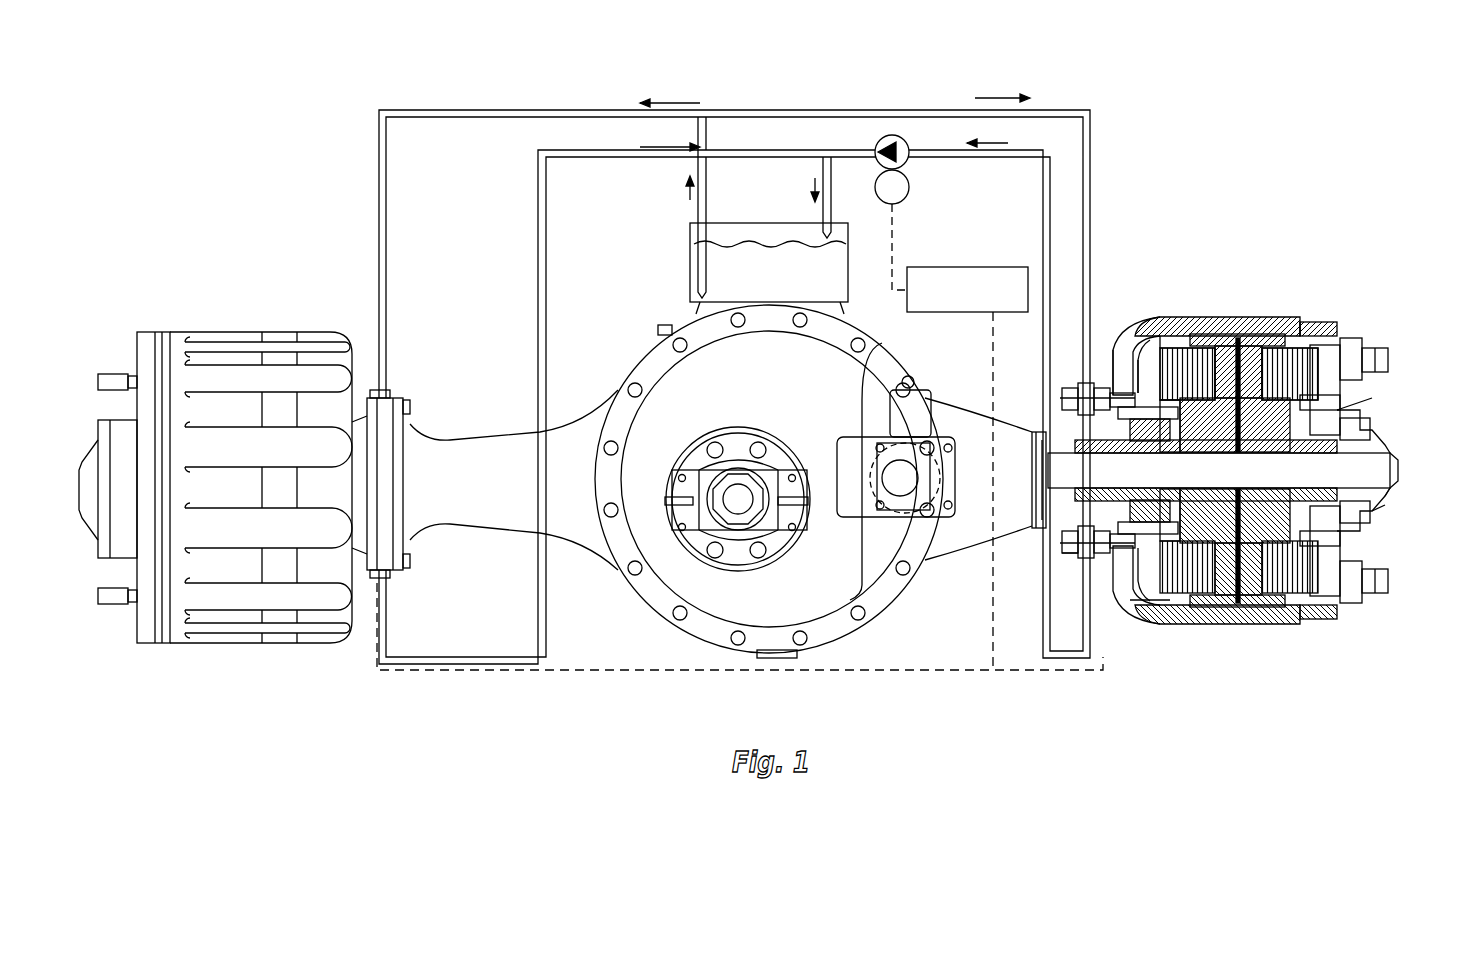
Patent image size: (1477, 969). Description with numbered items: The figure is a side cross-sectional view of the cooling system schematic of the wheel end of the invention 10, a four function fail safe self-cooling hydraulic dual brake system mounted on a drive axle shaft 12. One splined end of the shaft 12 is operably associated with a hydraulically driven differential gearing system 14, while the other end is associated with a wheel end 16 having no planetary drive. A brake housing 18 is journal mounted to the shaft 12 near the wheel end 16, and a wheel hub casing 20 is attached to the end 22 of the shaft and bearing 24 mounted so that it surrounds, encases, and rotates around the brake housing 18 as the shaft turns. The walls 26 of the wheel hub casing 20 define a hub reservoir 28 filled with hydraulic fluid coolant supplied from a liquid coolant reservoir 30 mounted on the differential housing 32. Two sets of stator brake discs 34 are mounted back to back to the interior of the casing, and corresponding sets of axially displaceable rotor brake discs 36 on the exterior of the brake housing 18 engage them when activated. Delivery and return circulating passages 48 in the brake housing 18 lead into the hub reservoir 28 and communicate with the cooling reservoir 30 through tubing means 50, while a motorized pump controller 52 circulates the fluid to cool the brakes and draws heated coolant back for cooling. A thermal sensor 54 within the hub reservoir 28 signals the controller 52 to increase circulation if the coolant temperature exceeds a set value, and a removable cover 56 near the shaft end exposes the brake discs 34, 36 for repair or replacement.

The four function fail safe self-cooling hydraulic dual brake system 10 is at (1232, 482).
The drive axle shaft 12 is at (1393, 450).
The hydraulically driven differential gearing system 14 is at (815, 597).
The wheel end 16 is at (1320, 320).
The brake housing 18 is at (1308, 320).
The wheel hub casing 20 is at (1372, 398).
The end of the shaft 22 is at (1395, 490).
The bearing 24 is at (1128, 335).
The walls 26 is at (1143, 325).
The hub reservoir 28 is at (1170, 330).
The liquid coolant reservoir 30 is at (688, 282).
The differential housing 32 is at (852, 330).
The stator brake discs 34 is at (1283, 335).
The rotor brake discs 36 is at (1338, 610).
The delivery and return circulating passages 48 is at (1070, 565).
The tubing means 50 is at (1072, 108).
The motorized pump controller 52 is at (966, 267).
The thermal sensor 54 is at (1140, 620).
The removable cover 56 is at (1385, 505).